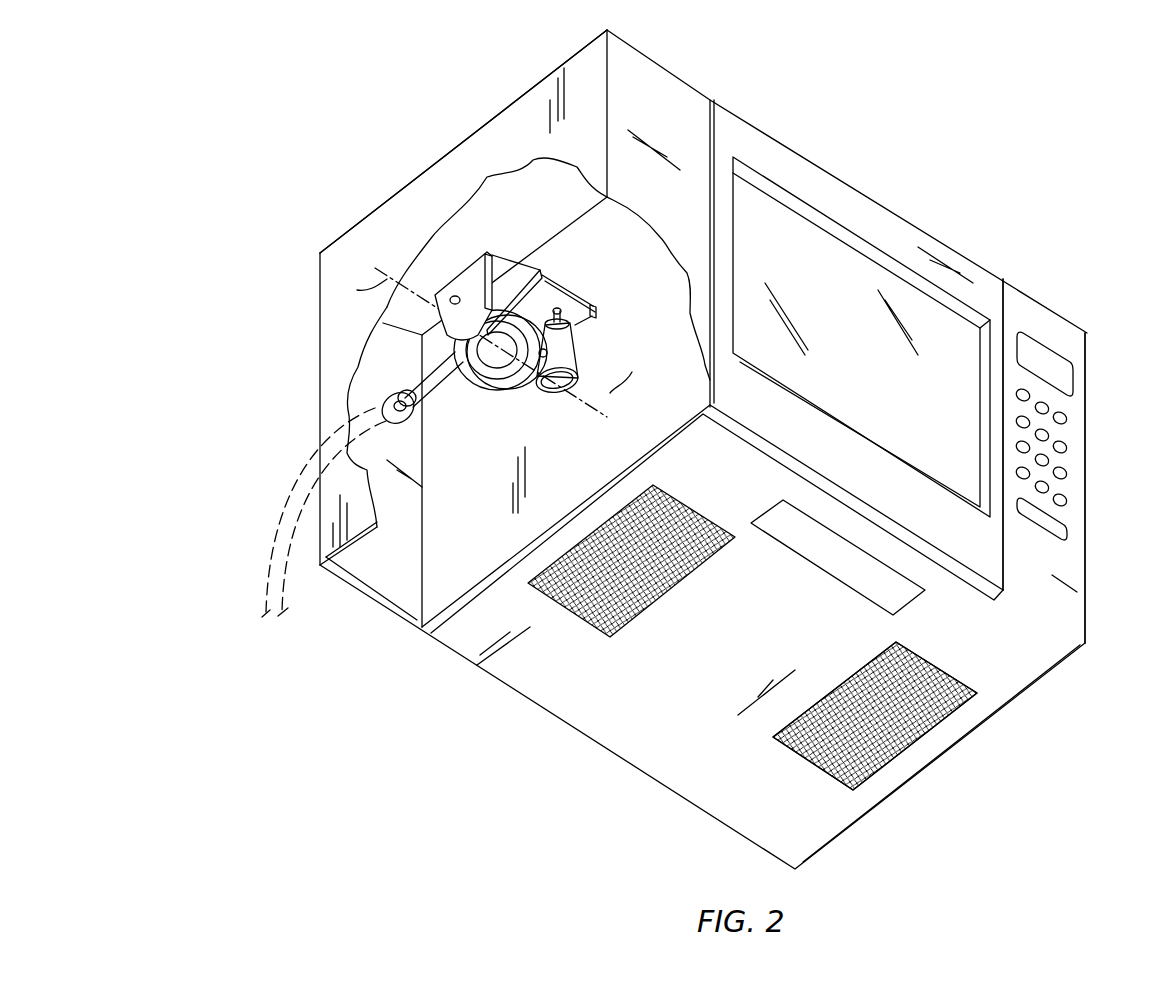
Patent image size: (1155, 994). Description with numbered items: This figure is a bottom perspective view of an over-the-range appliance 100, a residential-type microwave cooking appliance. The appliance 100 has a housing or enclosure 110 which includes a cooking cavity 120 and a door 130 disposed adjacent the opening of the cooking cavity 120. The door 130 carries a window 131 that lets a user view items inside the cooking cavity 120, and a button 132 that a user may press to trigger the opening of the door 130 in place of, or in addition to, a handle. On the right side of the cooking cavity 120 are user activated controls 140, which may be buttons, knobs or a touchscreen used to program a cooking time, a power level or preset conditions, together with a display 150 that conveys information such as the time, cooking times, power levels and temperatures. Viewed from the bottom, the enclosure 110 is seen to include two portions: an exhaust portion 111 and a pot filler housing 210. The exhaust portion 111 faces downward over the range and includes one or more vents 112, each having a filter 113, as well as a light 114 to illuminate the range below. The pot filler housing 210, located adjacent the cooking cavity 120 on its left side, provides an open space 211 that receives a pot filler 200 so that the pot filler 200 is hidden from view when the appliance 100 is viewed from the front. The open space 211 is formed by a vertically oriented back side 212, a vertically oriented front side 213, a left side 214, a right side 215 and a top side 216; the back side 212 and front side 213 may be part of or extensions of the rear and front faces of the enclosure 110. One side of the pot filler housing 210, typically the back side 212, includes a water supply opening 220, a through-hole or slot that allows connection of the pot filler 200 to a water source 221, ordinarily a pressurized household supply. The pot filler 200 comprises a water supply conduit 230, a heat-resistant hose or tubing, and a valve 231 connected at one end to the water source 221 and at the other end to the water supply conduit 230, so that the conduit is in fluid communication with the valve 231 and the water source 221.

The appliance 100 is at (370, 112).
The housing or enclosure 110 is at (508, 125).
The exhaust portion 111 is at (953, 730).
The vents 112 is at (600, 640).
The filter 113 is at (800, 727).
The light 114 is at (915, 600).
The cooking cavity 120 is at (897, 198).
The door 130 is at (970, 542).
The window 131 is at (890, 369).
The button 132 is at (1050, 523).
The user activated controls 140 is at (1077, 447).
The display 150 is at (1040, 357).
The pot filler 200 is at (417, 369).
The pot filler housing 210 is at (473, 555).
The open space 211 is at (717, 523).
The back side 212 is at (404, 571).
The front side 213 is at (652, 97).
The left side 214 is at (377, 227).
The right side 215 is at (597, 443).
The top side 216 is at (547, 207).
The water supply opening 220 is at (390, 413).
The water source 221 is at (268, 538).
The water supply conduit 230 is at (442, 385).
The valve 231 is at (428, 420).